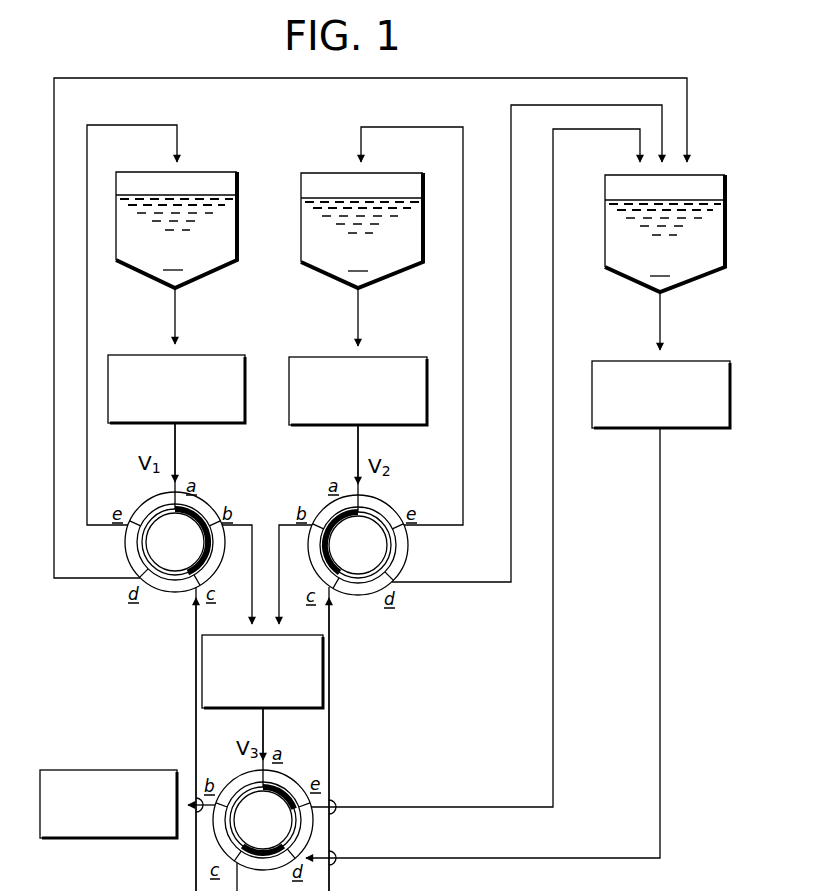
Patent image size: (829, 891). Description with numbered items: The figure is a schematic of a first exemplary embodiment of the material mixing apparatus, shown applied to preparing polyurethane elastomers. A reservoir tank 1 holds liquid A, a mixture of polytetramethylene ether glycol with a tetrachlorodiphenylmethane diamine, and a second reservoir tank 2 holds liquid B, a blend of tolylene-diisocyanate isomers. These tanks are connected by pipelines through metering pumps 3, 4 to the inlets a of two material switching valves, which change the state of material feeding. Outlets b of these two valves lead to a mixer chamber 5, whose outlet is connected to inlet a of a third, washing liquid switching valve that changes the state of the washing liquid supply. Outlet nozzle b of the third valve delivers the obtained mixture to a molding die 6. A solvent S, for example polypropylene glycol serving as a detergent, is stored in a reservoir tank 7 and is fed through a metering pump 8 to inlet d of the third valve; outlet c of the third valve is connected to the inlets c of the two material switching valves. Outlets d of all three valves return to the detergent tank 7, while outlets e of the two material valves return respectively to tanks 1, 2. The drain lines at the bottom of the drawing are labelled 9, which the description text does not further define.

The reservoir tank 1 is at (210, 178).
The reservoir tank 2 is at (329, 185).
The metering pump 3 is at (190, 353).
The metering pump 4 is at (350, 355).
The mixer chamber 5 is at (240, 631).
The molding die 6 is at (103, 770).
The reservoir tank 7 is at (707, 187).
The metering pump 8 is at (650, 360).
The drain lines 9 is at (284, 739).